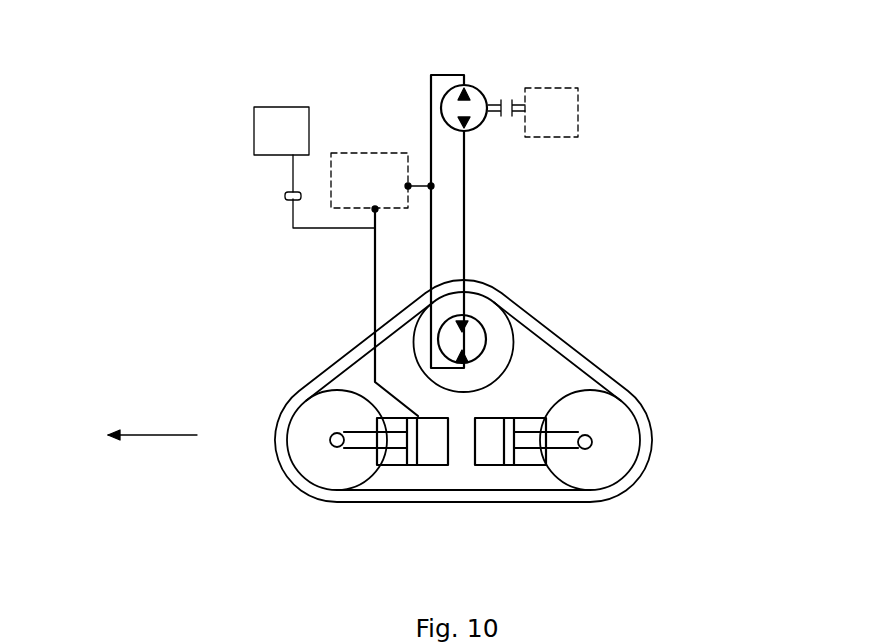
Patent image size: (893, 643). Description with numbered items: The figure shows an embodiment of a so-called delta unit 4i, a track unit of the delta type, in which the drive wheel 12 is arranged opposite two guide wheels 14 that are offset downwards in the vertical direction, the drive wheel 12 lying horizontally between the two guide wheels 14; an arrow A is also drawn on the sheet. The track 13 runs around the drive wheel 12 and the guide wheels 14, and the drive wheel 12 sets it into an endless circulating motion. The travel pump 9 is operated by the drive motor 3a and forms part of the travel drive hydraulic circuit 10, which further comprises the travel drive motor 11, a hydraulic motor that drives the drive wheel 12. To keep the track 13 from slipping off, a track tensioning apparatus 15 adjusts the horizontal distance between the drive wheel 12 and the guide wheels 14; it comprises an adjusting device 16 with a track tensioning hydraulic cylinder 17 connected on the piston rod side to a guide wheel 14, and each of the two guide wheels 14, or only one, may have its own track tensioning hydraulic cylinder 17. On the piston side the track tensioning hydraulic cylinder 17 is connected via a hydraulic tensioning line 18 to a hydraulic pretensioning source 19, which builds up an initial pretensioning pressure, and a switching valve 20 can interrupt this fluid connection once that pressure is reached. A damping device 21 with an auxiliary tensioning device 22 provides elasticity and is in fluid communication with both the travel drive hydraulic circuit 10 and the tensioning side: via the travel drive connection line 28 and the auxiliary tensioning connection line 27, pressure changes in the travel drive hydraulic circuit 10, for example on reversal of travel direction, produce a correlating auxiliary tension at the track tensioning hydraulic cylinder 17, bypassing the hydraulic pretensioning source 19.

The drive motor 3a is at (568, 112).
The travel pump 9 is at (478, 105).
The travel drive hydraulic circuit 10 is at (465, 208).
The travel drive motor 11 is at (487, 347).
The drive wheel 12 is at (502, 347).
The track 13 is at (642, 422).
The guide wheel 14 is at (600, 520).
The track tensioning apparatus 15 is at (278, 208).
The adjusting device 16 is at (387, 423).
The track tensioning hydraulic cylinder 17 is at (442, 465).
The hydraulic tensioning line 18 is at (292, 182).
The hydraulic pretensioning source 19 is at (273, 113).
The switching valve 20 is at (302, 190).
The damping device 21 is at (369, 157).
The auxiliary tensioning device 22 is at (361, 167).
The auxiliary tensioning connection line 27 is at (378, 220).
The travel drive connection line 28 is at (422, 180).
The delta unit 4i is at (415, 478).
The direction of travel A is at (139, 436).